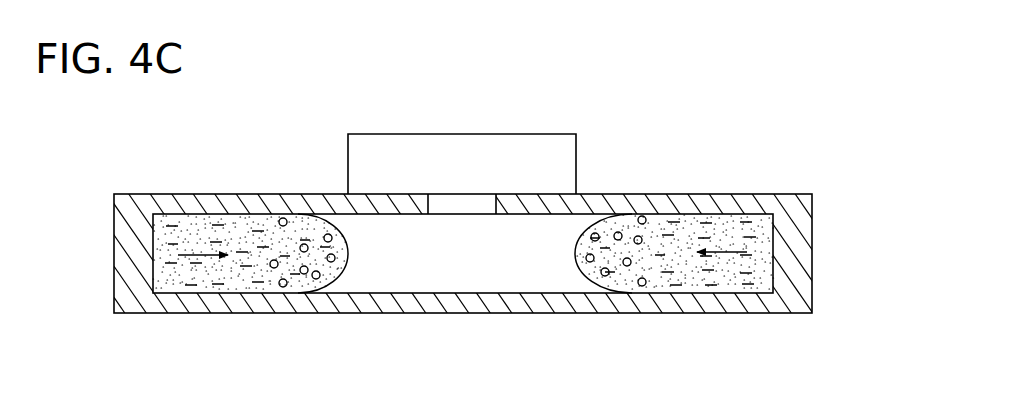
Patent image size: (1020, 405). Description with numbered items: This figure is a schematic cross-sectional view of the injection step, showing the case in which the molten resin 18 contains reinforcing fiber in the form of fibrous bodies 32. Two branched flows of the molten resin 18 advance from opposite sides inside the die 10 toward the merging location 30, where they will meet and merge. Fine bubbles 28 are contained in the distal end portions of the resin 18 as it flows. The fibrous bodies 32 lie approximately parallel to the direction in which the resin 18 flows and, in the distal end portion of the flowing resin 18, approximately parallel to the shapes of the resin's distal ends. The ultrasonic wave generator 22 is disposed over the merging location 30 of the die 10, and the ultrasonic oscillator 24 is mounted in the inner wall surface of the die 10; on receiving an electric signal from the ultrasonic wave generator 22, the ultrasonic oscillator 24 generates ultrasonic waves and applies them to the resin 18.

The die 10 is at (812, 240).
The molten resin 18 is at (243, 220).
The ultrasonic wave generator 22 is at (377, 133).
The ultrasonic oscillator 24 is at (473, 200).
The fine bubbles 28 is at (303, 237).
The merging location 30 is at (467, 258).
The fibrous bodies 32 is at (192, 237).